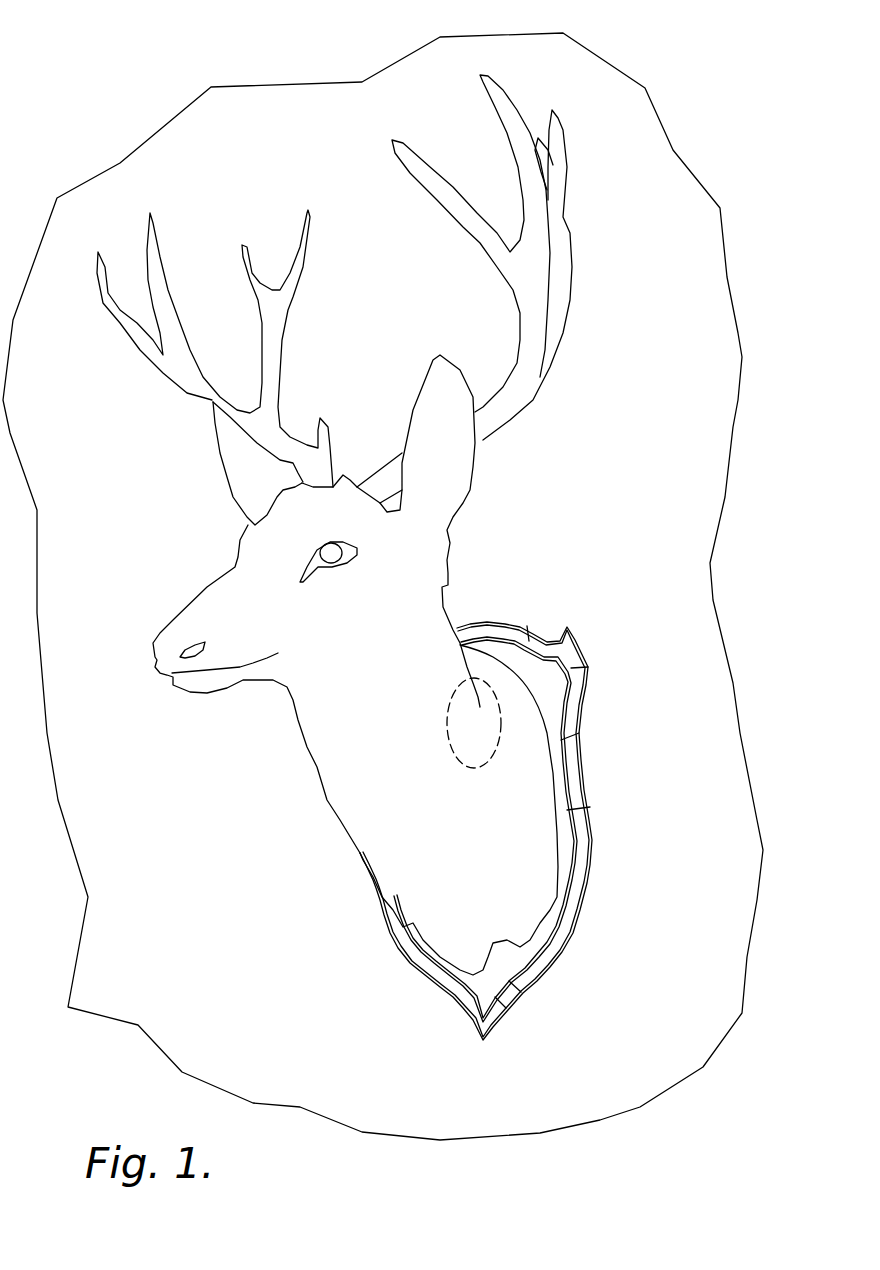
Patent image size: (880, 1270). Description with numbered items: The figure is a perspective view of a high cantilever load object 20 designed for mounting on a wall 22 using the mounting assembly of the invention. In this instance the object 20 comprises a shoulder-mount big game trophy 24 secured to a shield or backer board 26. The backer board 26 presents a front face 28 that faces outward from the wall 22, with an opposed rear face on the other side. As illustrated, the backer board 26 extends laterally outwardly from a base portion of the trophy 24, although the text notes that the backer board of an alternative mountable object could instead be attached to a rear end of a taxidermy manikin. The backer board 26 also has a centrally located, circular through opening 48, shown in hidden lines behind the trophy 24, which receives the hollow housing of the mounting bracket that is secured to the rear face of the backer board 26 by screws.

The high cantilever load object 20 is at (389, 557).
The wall 22 is at (648, 157).
The shoulder-mount big game trophy 24 is at (450, 610).
The backer board 26 is at (505, 831).
The front face 28 is at (495, 975).
The circular through opening 48 is at (480, 760).